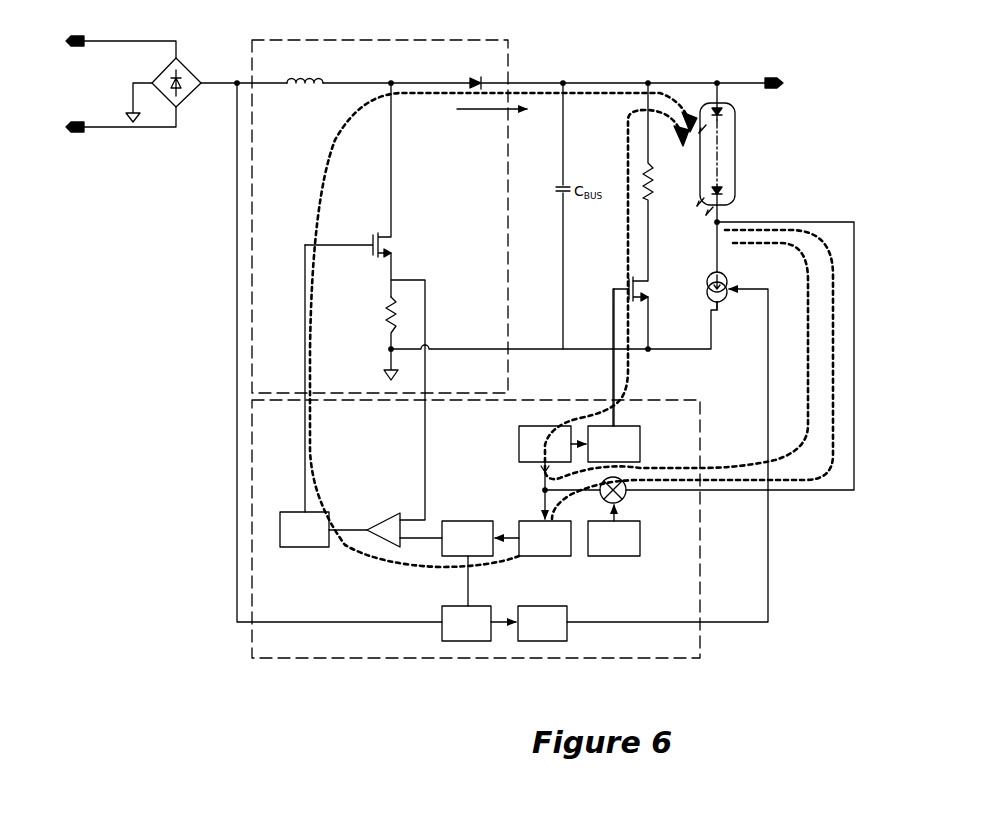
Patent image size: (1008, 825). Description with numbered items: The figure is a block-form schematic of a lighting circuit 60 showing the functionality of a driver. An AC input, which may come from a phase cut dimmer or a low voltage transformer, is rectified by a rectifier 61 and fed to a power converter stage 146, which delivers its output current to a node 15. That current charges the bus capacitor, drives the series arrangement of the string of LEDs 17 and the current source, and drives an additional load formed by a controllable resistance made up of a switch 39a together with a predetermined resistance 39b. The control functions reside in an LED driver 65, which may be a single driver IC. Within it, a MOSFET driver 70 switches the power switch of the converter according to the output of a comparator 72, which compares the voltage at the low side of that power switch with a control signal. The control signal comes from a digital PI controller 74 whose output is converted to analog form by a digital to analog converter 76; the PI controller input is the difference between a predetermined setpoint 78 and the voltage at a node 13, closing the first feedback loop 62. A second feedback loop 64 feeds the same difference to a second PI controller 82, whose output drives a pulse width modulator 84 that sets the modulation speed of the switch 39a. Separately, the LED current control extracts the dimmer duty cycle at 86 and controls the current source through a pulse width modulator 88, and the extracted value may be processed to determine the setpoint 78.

The LED lighting system 60 is at (165, 343).
The rectifier 61 is at (184, 107).
The boost converter stage 146 is at (484, 280).
The node 15 is at (647, 82).
The string of LEDs 17 is at (735, 143).
The node 13 is at (720, 221).
The switch 39a is at (628, 284).
The predetermined resistance 39b is at (646, 165).
The feedback loop 62 is at (840, 322).
The feedback loop 64 is at (808, 415).
The LED driver 65 is at (510, 473).
The MOSFET driver 70 is at (304, 529).
The comparator 72 is at (396, 516).
The digital PI controller 74 is at (533, 538).
The digital to analog converter 76 is at (467, 563).
The setpoint 78 is at (614, 530).
The second PI controller 82 is at (545, 472).
The pulse width modulator 84 is at (605, 375).
The duty cycle extraction 86 is at (466, 623).
The pulse width modulator 88 is at (629, 465).